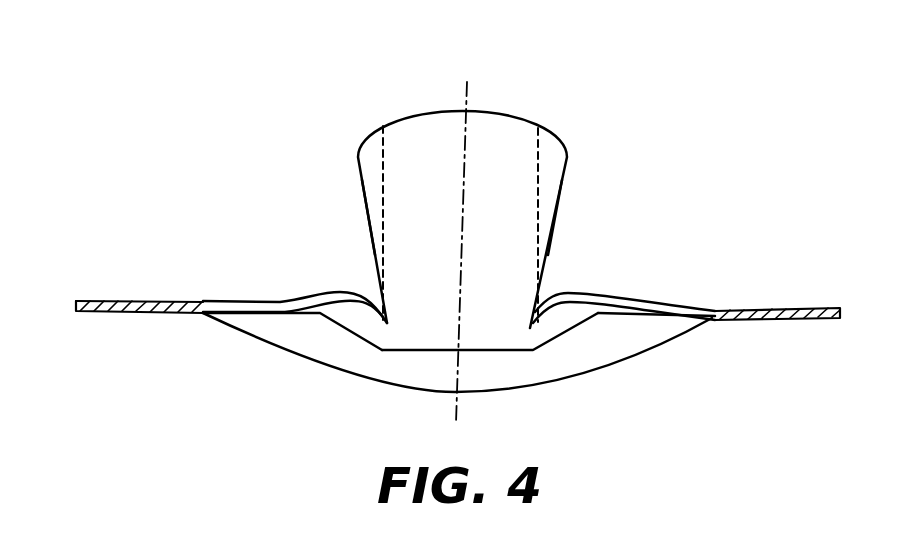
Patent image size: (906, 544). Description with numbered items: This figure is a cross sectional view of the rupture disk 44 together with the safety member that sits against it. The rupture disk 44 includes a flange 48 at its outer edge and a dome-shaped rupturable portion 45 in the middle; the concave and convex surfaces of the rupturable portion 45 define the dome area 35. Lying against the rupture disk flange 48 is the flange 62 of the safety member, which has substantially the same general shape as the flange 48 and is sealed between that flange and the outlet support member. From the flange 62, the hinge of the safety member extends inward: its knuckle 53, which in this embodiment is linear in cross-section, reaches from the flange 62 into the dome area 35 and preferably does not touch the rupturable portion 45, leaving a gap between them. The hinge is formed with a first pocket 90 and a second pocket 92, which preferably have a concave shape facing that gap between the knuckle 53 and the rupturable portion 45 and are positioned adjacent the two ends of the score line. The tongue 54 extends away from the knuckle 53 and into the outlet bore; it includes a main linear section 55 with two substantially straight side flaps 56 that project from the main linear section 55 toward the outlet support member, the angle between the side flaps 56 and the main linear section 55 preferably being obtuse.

The dome area 35 is at (443, 383).
The rupture disk 44 is at (205, 352).
The rupturable portion 45 is at (350, 378).
The flange 48 is at (110, 313).
The knuckle 53 is at (503, 352).
The tongue 54 is at (445, 95).
The main linear section 55 is at (495, 143).
The side flaps 56 is at (368, 164).
The flange 62 is at (110, 300).
The first pocket 90 is at (340, 307).
The second pocket 92 is at (568, 315).